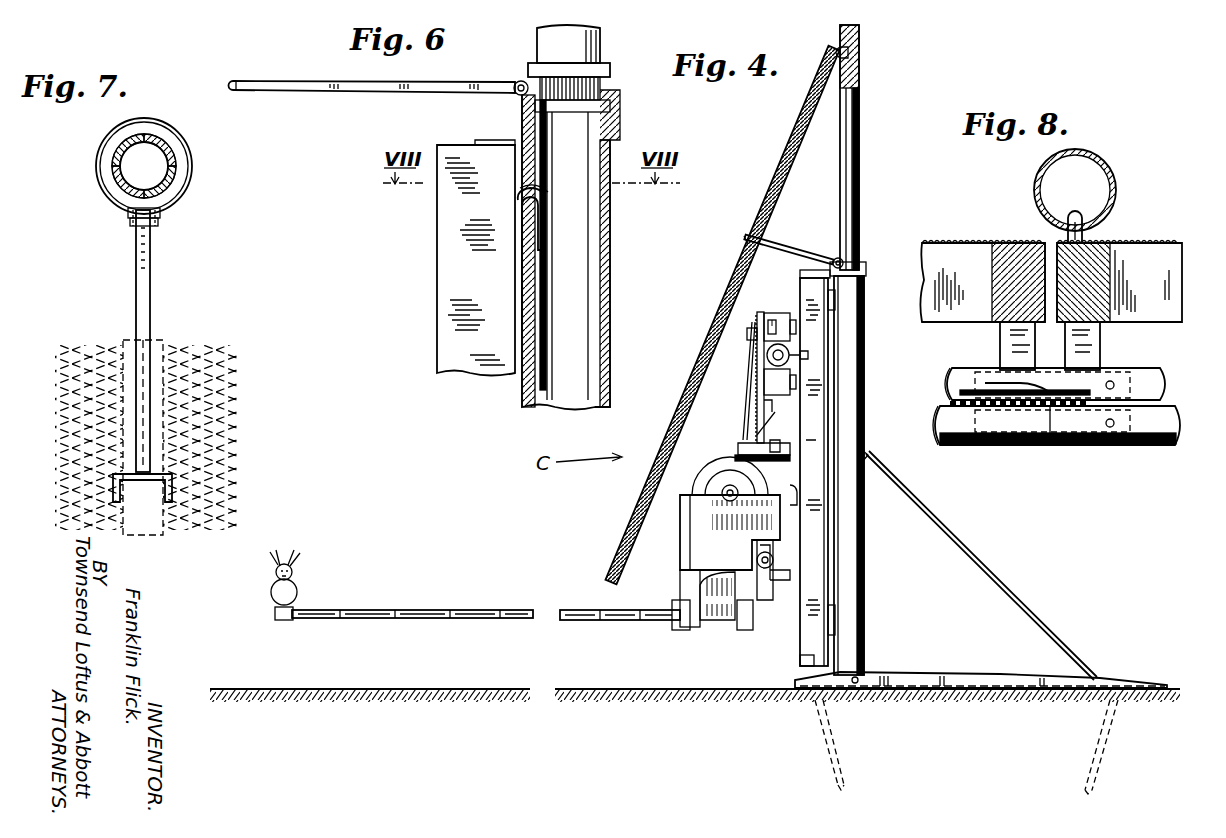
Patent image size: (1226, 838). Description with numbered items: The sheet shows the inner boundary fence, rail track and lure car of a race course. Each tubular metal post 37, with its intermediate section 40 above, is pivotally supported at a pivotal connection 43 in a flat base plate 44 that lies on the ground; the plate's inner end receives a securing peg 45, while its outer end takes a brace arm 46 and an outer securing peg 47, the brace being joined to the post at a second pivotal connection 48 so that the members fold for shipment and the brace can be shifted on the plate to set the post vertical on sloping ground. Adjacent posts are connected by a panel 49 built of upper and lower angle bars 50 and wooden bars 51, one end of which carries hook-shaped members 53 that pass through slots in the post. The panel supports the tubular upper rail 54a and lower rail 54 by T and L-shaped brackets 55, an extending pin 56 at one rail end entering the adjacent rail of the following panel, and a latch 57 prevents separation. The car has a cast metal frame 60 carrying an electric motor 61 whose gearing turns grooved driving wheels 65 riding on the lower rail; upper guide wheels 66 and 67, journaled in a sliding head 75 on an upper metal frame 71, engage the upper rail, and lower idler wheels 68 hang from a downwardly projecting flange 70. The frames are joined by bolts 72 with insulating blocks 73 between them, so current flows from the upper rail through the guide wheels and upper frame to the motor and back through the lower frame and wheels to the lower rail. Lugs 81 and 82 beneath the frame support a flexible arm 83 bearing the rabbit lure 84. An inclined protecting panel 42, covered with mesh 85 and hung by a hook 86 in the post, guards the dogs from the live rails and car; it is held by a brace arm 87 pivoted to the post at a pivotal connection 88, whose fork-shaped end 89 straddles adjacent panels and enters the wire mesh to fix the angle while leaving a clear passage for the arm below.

In FIG. 6, the tubular metal post 37 is at (610, 282).
In FIG. 4, the tubular metal post 37 is at (851, 383).
In FIG. 8, the tubular metal post 37 is at (1100, 165).
In FIG. 7, the intermediate section 40 is at (158, 142).
In FIG. 6, the intermediate section 40 is at (600, 46).
In FIG. 4, the intermediate section 40 is at (860, 145).
In FIG. 7, the protecting panel 42 is at (123, 340).
In FIG. 4, the protecting panel 42 is at (783, 172).
In FIG. 4, the pivotal connection 43 is at (860, 680).
In FIG. 4, the base plate 44 is at (950, 674).
In FIG. 4, the securing peg 45 is at (820, 742).
In FIG. 4, the brace arm 46 is at (1003, 575).
In FIG. 4, the outer securing peg 47 is at (1092, 741).
In FIG. 4, the pivotal connection 48 is at (868, 456).
In FIG. 6, the panel 49 is at (430, 279).
In FIG. 4, the panel 49 is at (815, 428).
In FIG. 8, the panel 49 is at (946, 248).
In FIG. 6, the angle bar 50 is at (497, 138).
In FIG. 4, the angle bar 50 is at (810, 272).
In FIG. 6, the wooden bar 51 is at (452, 355).
In FIG. 4, the wooden bar 51 is at (823, 400).
In FIG. 8, the wooden bar 51 is at (1015, 252).
In FIG. 6, the hook-shaped member 53 is at (545, 235).
In FIG. 4, the hook-shaped member 53 is at (836, 300).
In FIG. 8, the hook-shaped member 53 is at (1082, 232).
In FIG. 4, the lower sectional rail 54 is at (790, 578).
In FIG. 8, the lower sectional rail 54 is at (1125, 445).
In FIG. 4, the upper sectional rail 54a is at (782, 353).
In FIG. 8, the upper sectional rail 54a is at (1145, 372).
In FIG. 4, the T and L-shaped bracket 55 is at (800, 359).
In FIG. 8, the T and L-shaped bracket 55 is at (1000, 345).
In FIG. 8, the extending pin 56 is at (965, 440).
In FIG. 4, the latch 57 is at (800, 500).
In FIG. 4, the cast metal frame 60 is at (668, 533).
In FIG. 4, the electric motor 61 is at (704, 456).
In FIG. 4, the grooved driving wheel 65 is at (780, 540).
In FIG. 4, the guide wheel 66 is at (782, 316).
In FIG. 4, the guide wheel 67 is at (765, 402).
In FIG. 4, the lower idler wheel 68 is at (760, 600).
In FIG. 4, the downwardly projecting flange 70 is at (735, 620).
In FIG. 4, the upper metal frame 71 is at (745, 418).
In FIG. 4, the bolt 72 is at (778, 440).
In FIG. 4, the insulating block 73 is at (745, 452).
In FIG. 4, the sliding head 75 is at (757, 322).
In FIG. 4, the lug 81 is at (625, 627).
In FIG. 4, the lug 82 is at (745, 630).
In FIG. 4, the arm 83 is at (508, 617).
In FIG. 4, the lure 84 is at (298, 583).
In FIG. 4, the mesh 85 is at (715, 326).
In FIG. 4, the hook 86 is at (850, 52).
In FIG. 7, the brace arm 87 is at (150, 310).
In FIG. 6, the brace arm 87 is at (380, 94).
In FIG. 4, the brace arm 87 is at (790, 248).
In FIG. 7, the pivotal connection 88 is at (160, 220).
In FIG. 6, the pivotal connection 88 is at (514, 92).
In FIG. 4, the pivotal connection 88 is at (845, 262).
In FIG. 7, the fork-shaped end 89 is at (165, 478).
In FIG. 6, the fork-shaped end 89 is at (240, 92).
In FIG. 4, the fork-shaped end 89 is at (745, 240).